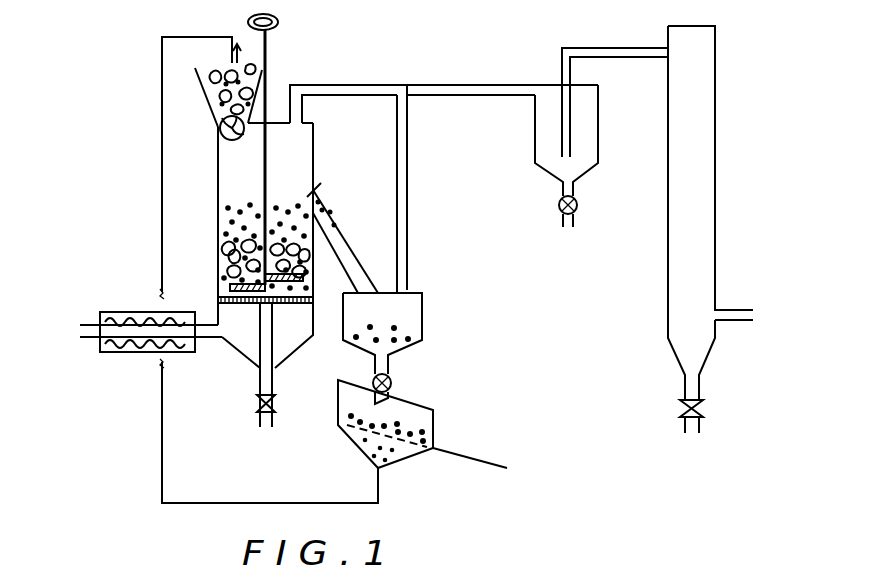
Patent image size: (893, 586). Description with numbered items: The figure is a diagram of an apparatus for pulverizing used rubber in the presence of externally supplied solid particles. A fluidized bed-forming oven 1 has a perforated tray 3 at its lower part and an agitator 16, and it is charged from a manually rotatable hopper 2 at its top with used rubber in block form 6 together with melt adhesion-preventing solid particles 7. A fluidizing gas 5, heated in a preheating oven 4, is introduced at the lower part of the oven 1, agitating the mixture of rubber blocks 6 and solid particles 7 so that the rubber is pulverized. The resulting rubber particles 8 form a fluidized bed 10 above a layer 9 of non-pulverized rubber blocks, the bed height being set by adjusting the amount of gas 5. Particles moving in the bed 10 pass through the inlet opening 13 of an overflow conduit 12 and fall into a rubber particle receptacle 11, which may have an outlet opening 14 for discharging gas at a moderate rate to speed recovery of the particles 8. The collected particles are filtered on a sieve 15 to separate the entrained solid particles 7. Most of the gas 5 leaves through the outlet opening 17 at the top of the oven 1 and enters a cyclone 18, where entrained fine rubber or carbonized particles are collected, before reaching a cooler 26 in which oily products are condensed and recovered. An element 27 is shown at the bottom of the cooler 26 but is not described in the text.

The fluidized bed-forming oven 1 is at (214, 167).
The manually rotatable hopper 2 is at (199, 89).
The perforated tray 3 is at (303, 304).
The preheating oven 4 is at (122, 312).
The fluidizing gas 5 is at (78, 332).
The used rubber in block form 6 is at (225, 247).
The melt adhesion-preventing solid particles 7 is at (217, 67).
The rubber particles 8 is at (242, 204).
The layer of non-pulverized rubber blocks 9 is at (218, 277).
The fluidized bed 10 is at (214, 213).
The rubber particle receptacle 11 is at (423, 310).
The overflow conduit 12 is at (344, 229).
The inlet opening 13 is at (319, 192).
The outlet opening 14 is at (409, 290).
The sieve 15 is at (413, 402).
The agitator 16 is at (278, 25).
The outlet opening 17 is at (305, 120).
The cyclone 18 is at (535, 122).
The cooler 26 is at (716, 143).
The discharge valve 27 is at (704, 408).